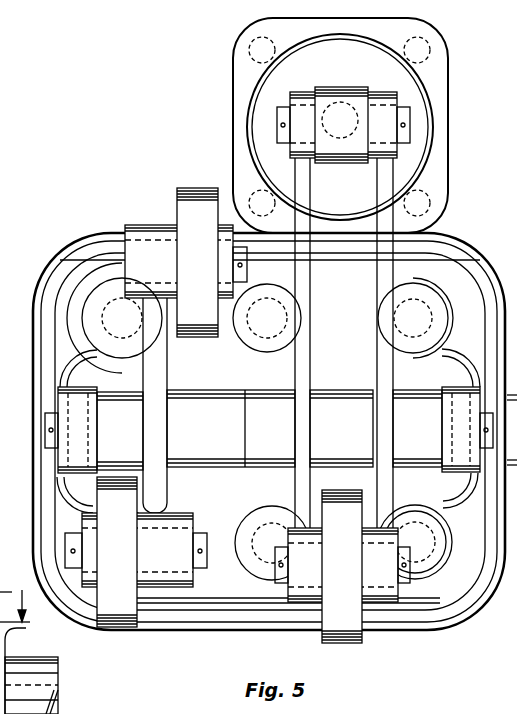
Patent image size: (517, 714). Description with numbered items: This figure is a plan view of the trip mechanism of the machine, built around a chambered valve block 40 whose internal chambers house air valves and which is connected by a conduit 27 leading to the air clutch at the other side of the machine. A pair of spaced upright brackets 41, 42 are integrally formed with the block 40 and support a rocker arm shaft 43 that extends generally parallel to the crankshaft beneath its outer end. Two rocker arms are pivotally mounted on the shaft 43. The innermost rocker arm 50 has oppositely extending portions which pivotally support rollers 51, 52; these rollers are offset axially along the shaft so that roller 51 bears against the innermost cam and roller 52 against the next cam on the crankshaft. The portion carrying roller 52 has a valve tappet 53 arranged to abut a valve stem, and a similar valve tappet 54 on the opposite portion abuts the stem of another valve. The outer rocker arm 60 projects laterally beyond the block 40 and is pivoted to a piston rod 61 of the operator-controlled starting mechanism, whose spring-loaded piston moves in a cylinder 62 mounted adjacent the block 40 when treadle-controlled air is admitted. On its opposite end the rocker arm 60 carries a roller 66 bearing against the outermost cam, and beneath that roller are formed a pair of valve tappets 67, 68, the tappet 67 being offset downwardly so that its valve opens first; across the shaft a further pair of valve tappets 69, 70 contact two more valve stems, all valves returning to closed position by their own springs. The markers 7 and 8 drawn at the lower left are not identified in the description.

The chambered valve block 40 is at (469, 265).
The upright bracket 41 is at (455, 361).
The upright bracket 42 is at (80, 372).
The rocker arm shaft 43 is at (482, 455).
The innermost rocker arm 50 is at (170, 430).
The roller 51 is at (125, 600).
The roller 52 is at (201, 200).
The valve tappet 53 is at (125, 346).
The valve tappet 54 is at (150, 530).
The outer rocker arm 60 is at (413, 429).
The piston rod 61 is at (336, 104).
The cylinder 62 is at (418, 103).
The roller 66 is at (345, 622).
The valve tappet 67 is at (272, 520).
The valve tappet 68 is at (436, 527).
The valve tappet 69 is at (263, 344).
The valve tappet 70 is at (440, 312).
The conduit 27 is at (44, 683).
The section line 7 is at (7, 581).
The section line 8 is at (20, 606).